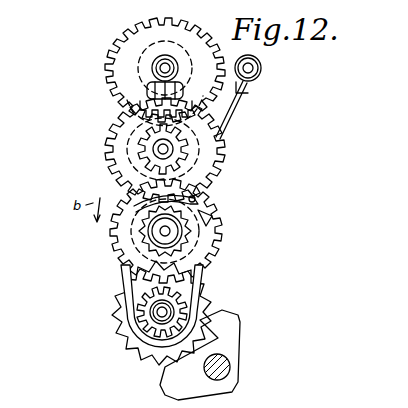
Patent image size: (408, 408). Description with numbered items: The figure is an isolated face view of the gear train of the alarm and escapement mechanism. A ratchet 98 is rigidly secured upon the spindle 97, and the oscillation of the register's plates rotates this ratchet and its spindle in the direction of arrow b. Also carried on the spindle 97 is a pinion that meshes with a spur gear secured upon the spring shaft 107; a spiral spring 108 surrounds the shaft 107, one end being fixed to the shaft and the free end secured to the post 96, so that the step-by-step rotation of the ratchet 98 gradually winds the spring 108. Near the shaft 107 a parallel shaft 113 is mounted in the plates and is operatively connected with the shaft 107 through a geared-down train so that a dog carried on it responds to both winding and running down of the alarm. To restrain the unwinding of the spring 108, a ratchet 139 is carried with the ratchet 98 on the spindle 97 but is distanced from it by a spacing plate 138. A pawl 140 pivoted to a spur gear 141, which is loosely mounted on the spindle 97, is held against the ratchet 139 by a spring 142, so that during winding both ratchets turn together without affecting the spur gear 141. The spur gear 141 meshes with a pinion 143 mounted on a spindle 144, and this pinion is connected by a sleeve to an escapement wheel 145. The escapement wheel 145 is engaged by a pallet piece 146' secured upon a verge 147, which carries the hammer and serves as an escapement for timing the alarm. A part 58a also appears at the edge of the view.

The frame part 58a is at (42, 8).
The shaft 113 is at (160, 68).
The post 96 is at (260, 72).
The spiral spring 108 is at (229, 115).
The spring shaft 107 is at (160, 148).
The spring 142 is at (150, 182).
The ratchet 98 is at (137, 197).
The pawl 140 is at (207, 195).
The spur gear 141 is at (212, 220).
The ratchet 139 is at (157, 229).
The spindle 97 is at (168, 232).
The escapement wheel 145 is at (120, 327).
The spacing plate 138 is at (132, 287).
The pinion 143 is at (173, 303).
The spindle 144 is at (160, 312).
The pallet piece 146' is at (221, 355).
The verge 147 is at (222, 368).